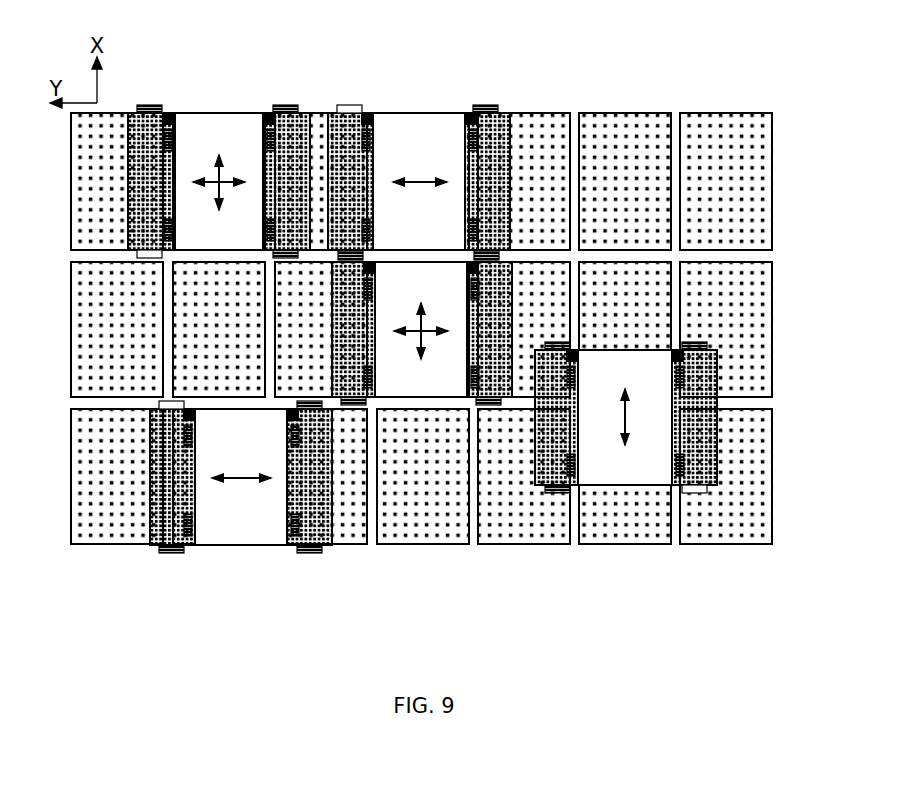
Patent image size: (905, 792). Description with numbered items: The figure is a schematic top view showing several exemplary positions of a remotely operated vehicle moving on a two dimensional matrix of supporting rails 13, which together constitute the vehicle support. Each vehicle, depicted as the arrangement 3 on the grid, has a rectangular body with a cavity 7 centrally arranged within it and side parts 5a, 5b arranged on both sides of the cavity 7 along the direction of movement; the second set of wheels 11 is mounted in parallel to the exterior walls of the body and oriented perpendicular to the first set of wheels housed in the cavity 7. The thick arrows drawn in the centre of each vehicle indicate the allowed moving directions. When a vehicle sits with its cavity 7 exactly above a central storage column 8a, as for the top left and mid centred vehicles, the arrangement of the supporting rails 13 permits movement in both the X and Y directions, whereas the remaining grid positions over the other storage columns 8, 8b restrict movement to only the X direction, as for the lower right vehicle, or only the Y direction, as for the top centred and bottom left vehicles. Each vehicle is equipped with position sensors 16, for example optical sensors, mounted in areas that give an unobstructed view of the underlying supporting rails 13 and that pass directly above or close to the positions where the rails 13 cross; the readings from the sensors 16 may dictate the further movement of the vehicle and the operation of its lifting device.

The floor arrangement 3 is at (156, 612).
The side part 5a is at (137, 198).
The side part 5b is at (274, 198).
The cavity 7 is at (212, 144).
The floor plate 8 is at (618, 194).
The central storage column 8a is at (205, 243).
The second floor plate 8b is at (291, 339).
The second set of four wheels 11 is at (280, 108).
The supporting rails 13 is at (675, 165).
The position sensors 16 is at (470, 112).